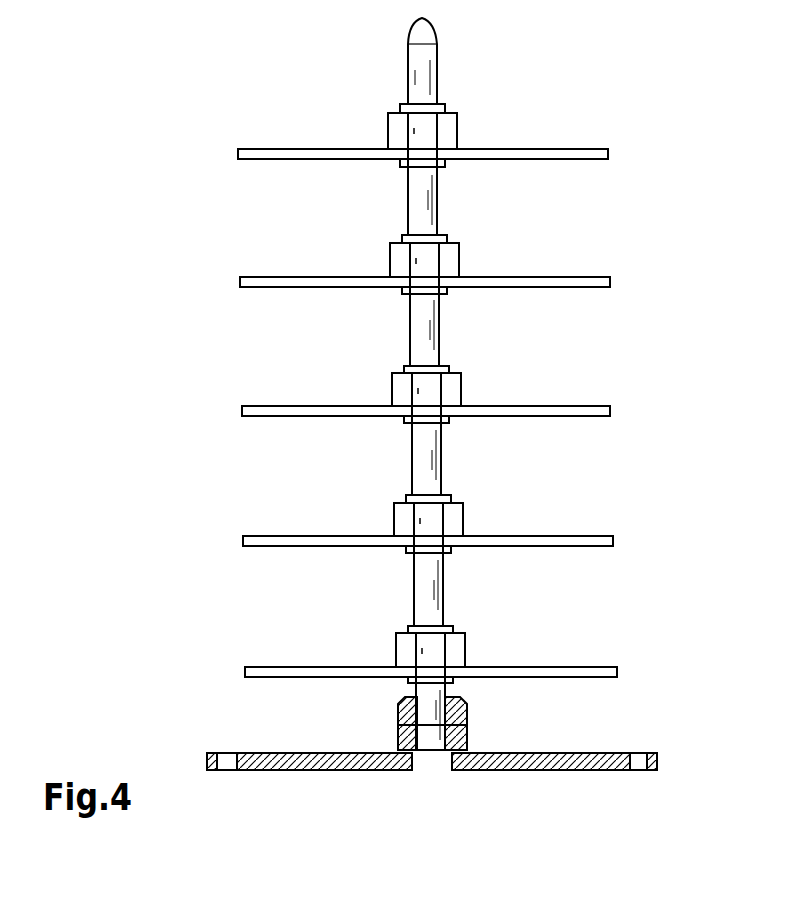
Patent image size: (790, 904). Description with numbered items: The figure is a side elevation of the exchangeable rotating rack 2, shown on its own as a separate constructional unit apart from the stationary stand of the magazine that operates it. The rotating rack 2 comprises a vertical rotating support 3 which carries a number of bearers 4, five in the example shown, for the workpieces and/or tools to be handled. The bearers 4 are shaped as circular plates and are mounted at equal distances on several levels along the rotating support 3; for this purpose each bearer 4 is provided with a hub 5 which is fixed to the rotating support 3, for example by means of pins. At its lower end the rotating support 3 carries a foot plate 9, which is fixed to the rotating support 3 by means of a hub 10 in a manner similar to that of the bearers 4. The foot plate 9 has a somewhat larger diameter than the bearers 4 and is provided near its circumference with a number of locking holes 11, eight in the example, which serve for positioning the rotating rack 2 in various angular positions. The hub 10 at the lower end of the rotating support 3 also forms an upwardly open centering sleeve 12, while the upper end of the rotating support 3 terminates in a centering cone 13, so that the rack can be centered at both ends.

The rotating rack 2 is at (446, 416).
The rotating support 3 is at (415, 210).
The bearer 4 is at (270, 153).
The hub 5 is at (441, 122).
The foot plate 9 is at (446, 731).
The hub 10 is at (467, 735).
The locking hole 11 is at (638, 755).
The centering sleeve 12 is at (420, 762).
The centering cone 13 is at (425, 43).